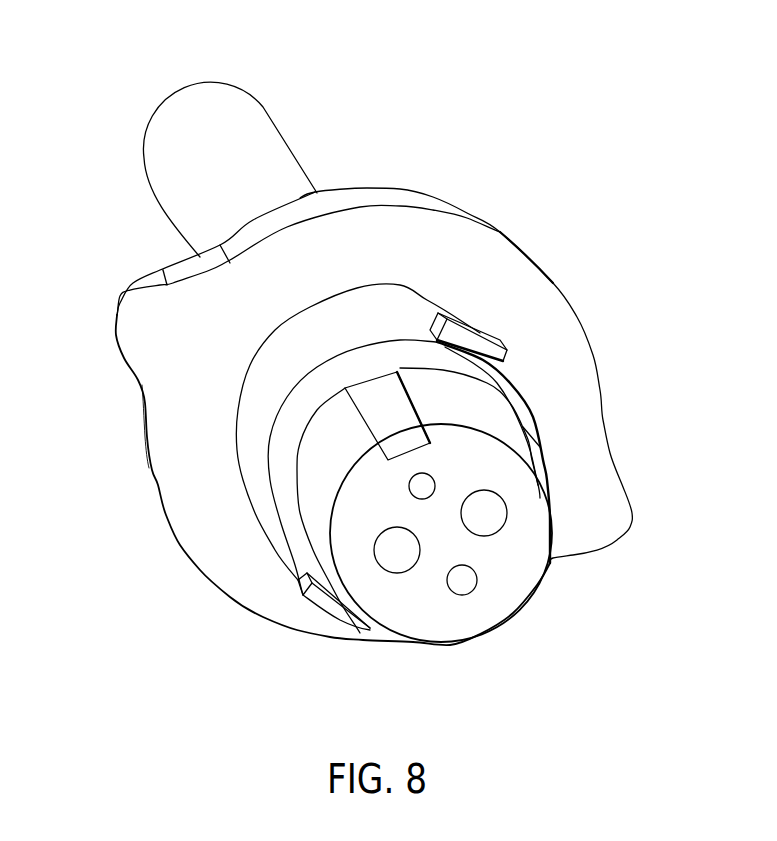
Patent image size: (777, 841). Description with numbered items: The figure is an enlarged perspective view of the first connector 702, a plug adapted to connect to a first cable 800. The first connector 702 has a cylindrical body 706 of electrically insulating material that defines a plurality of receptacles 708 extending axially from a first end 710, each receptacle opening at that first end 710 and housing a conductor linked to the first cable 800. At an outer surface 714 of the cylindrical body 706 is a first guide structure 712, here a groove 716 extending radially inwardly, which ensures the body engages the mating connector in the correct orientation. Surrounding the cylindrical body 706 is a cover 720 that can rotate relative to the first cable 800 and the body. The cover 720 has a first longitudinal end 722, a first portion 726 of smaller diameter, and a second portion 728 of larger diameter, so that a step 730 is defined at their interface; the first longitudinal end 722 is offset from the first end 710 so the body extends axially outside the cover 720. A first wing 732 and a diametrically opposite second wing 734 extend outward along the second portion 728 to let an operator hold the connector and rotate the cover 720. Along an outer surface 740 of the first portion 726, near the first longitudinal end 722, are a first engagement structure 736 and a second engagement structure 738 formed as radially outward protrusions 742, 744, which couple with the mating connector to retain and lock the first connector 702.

The first connector 702 is at (593, 150).
The first cable 800 is at (198, 123).
The cover 720 is at (333, 200).
The second portion 728 is at (270, 223).
The second wing 734 is at (130, 294).
The step 730 is at (227, 533).
The first wing 732 is at (632, 515).
The first portion 726 is at (287, 358).
The outer surface 740 is at (323, 478).
The first longitudinal end 722 is at (547, 470).
The cylindrical body 706 is at (447, 397).
The outer surface 714 is at (420, 393).
The first guide structure 712 is at (365, 410).
The groove 716 is at (378, 433).
The second engagement structure 738 is at (462, 322).
The protrusion 744 is at (497, 332).
The first end 710 is at (400, 600).
The receptacles 708 is at (413, 477).
The protrusion 742 is at (313, 606).
The first engagement structure 736 is at (330, 602).